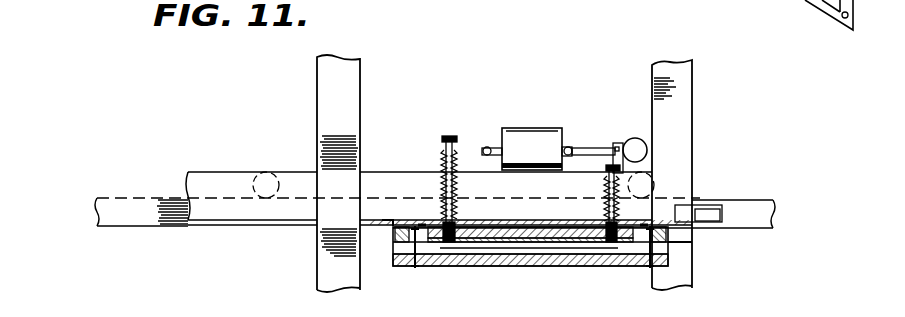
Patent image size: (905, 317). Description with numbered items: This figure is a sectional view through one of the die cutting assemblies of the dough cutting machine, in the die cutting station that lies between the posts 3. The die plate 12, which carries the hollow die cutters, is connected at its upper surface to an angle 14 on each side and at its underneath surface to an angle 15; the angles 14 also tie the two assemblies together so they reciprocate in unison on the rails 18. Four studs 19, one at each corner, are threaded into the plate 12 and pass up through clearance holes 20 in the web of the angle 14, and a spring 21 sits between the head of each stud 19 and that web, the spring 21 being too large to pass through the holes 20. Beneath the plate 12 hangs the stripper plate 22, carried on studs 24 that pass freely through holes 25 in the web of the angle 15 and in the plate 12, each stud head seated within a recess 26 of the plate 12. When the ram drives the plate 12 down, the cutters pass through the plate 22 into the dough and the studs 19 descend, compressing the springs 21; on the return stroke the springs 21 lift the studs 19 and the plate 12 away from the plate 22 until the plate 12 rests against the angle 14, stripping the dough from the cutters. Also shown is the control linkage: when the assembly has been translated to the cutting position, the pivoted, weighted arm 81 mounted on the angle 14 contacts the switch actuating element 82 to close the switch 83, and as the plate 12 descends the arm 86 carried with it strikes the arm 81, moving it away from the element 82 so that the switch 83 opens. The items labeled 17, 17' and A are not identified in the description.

The posts 3 is at (348, 103).
The angle 14 is at (210, 180).
The aperture 17 is at (487, 164).
The strip 17' is at (440, 267).
The rails 18 is at (752, 208).
The studs 19 is at (450, 135).
The clearance holes 20 is at (455, 215).
The spring 21 is at (442, 150).
The stripper plate 22 is at (530, 266).
The studs 24 is at (413, 268).
The holes 25 is at (418, 225).
The recess 26 is at (382, 220).
The die plate 12 is at (495, 238).
The angle 15 is at (457, 242).
The pivoted arm 81 is at (602, 148).
The switch actuating element 82 is at (485, 148).
The switch 83 is at (522, 128).
The arm 86 is at (588, 118).
The direction A is at (392, 240).